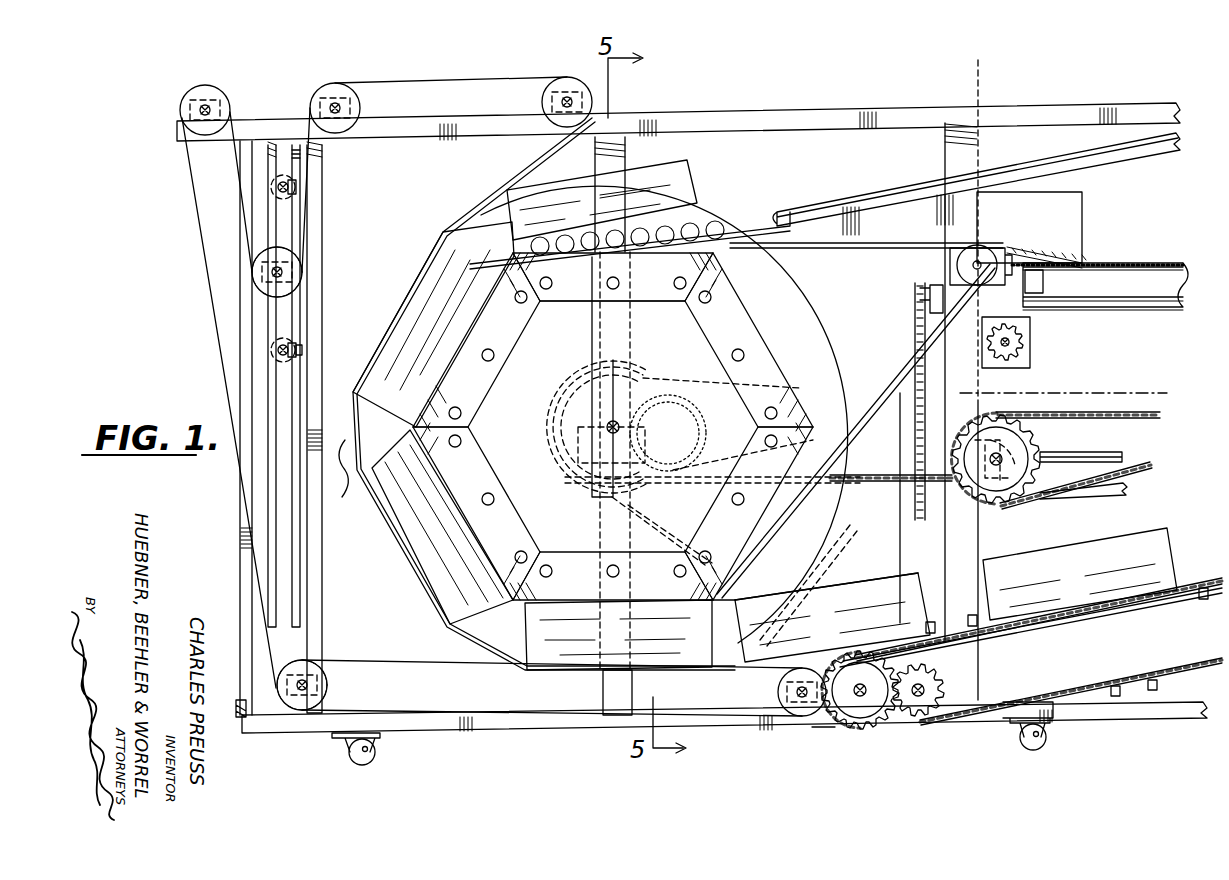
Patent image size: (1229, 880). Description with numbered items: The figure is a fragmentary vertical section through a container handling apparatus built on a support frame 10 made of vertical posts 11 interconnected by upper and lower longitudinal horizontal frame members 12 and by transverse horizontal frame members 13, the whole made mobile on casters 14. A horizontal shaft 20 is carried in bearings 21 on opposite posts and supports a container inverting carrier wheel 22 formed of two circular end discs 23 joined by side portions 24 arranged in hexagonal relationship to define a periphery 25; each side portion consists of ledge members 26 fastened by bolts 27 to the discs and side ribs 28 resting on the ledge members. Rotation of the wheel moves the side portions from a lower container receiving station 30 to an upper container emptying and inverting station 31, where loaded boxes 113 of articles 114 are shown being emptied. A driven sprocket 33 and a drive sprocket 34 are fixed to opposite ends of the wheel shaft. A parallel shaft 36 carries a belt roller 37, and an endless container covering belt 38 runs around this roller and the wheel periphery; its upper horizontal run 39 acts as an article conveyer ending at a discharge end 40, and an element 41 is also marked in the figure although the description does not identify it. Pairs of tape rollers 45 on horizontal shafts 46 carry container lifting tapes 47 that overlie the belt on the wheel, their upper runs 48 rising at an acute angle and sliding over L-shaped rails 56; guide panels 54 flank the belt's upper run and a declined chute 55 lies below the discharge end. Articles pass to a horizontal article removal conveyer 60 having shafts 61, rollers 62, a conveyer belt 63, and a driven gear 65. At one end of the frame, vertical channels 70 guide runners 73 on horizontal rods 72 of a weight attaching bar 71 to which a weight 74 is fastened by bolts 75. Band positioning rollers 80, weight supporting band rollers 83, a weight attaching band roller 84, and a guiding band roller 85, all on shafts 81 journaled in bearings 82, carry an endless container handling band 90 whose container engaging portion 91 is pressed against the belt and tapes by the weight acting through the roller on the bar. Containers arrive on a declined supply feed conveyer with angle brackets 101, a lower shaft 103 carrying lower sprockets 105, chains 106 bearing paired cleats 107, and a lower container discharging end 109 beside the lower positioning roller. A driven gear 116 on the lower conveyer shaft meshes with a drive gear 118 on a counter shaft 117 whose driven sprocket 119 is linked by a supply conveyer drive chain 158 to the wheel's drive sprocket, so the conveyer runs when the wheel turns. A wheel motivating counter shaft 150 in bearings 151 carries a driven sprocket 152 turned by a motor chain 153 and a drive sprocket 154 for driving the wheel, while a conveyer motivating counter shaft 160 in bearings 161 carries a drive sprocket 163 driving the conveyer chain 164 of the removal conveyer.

The support frame 10 is at (891, 99).
The vertical posts 11 is at (628, 130).
The horizontal frame members 12 is at (1000, 120).
The transverse horizontal frame members 13 is at (240, 717).
The casters 14 is at (370, 762).
The shaft 20 is at (616, 423).
The bearings 21 is at (604, 423).
The container inverting carrier wheel 22 is at (736, 193).
The circular end discs 23 is at (820, 320).
The side portions 24 is at (767, 334).
The periphery 25 is at (770, 335).
The ledge members 26 is at (713, 333).
The bolts 27 is at (680, 290).
The side ribs 28 is at (528, 300).
The container receiving station 30 is at (675, 680).
The container emptying and inverting station 31 is at (546, 168).
The driven sprocket 33 is at (700, 412).
The drive sprocket 34 is at (685, 450).
The shaft 36 is at (982, 268).
The belt roller 37 is at (958, 264).
The container covering belt 38 is at (893, 386).
The upper horizontal run 39 is at (715, 235).
The discharge end 40 is at (985, 248).
The slat stop 41 is at (726, 612).
The tape rollers 45 is at (1030, 336).
The horizontal shafts 46 is at (1022, 352).
The container lifting tapes 47 is at (832, 490).
The upper runs 48 is at (845, 196).
The guide panels 54 is at (1082, 205).
The chute 55 is at (1062, 255).
The L-shaped rails 56 is at (943, 180).
The article removal conveyer 60 is at (1166, 260).
The shafts 61 is at (1042, 308).
The rollers 62 is at (1150, 310).
The conveyer belt 63 is at (1105, 268).
The driven gear 65 is at (916, 296).
The channels 70 is at (293, 482).
The weight attaching bar 71 is at (298, 220).
The horizontal rods 72 is at (290, 189).
The runners 73 is at (287, 177).
The weight 74 is at (313, 328).
The bolts 75 is at (303, 356).
The band positioning rollers 80 is at (575, 85).
The shafts 81 is at (208, 105).
The bearings 82 is at (188, 106).
The weight supporting band rollers 83 is at (315, 88).
The weight attaching band roller 84 is at (292, 268).
The guiding band roller 85 is at (322, 685).
The container handling band 90 is at (218, 340).
The container engaging portion 91 is at (348, 478).
The angle brackets 101 is at (1200, 588).
The lower shaft 103 is at (855, 700).
The lower sprockets 105 is at (868, 712).
The chains 106 is at (1205, 655).
The cleats 107 is at (972, 615).
The lower container discharging end 109 is at (880, 572).
The loaded boxes 113 is at (512, 192).
The articles 114 is at (642, 240).
The driven gear 116 is at (835, 727).
The counter shaft 117 is at (922, 707).
The drive gear 118 is at (940, 700).
The driven sprocket 119 is at (945, 654).
The wheel motivating counter shaft 150 is at (1000, 465).
The bearings 151 is at (1003, 470).
The driven sprocket 152 is at (1025, 455).
The motor chain 153 is at (1160, 420).
The drive sprocket 154 is at (1080, 487).
The supply conveyer drive chain 158 is at (590, 482).
The conveyer motivating counter shaft 160 is at (1090, 453).
The bearings 161 is at (930, 443).
The drive sprocket 163 is at (920, 505).
The conveyer chain 164 is at (915, 337).